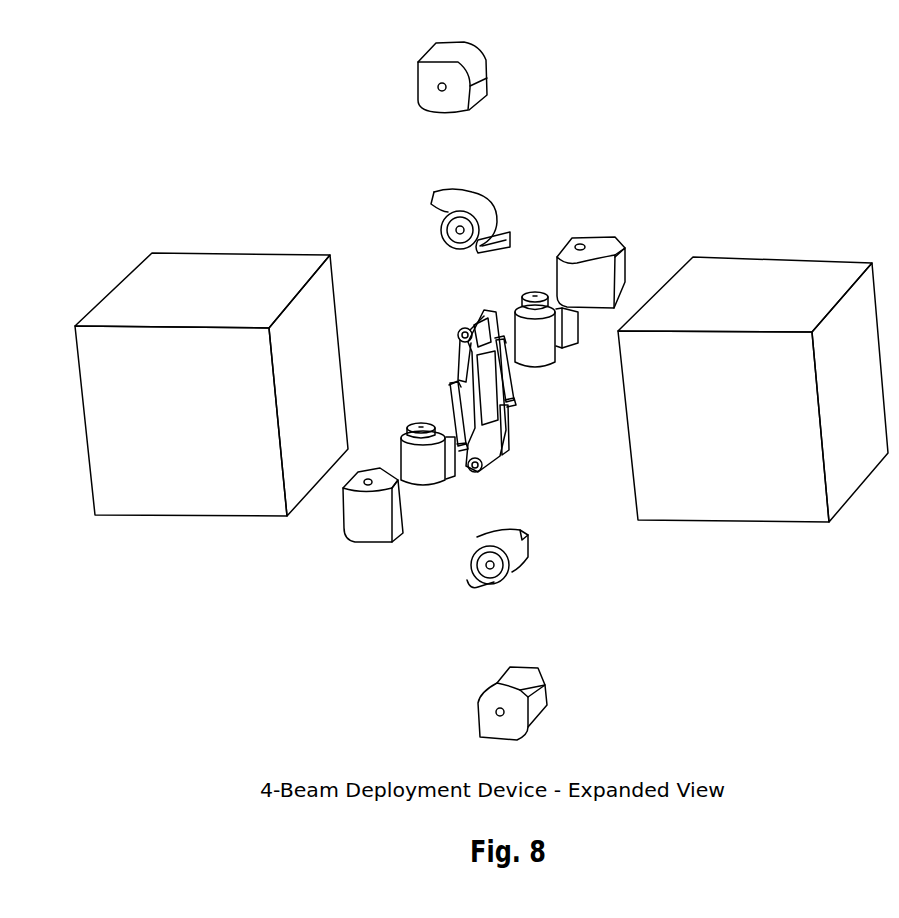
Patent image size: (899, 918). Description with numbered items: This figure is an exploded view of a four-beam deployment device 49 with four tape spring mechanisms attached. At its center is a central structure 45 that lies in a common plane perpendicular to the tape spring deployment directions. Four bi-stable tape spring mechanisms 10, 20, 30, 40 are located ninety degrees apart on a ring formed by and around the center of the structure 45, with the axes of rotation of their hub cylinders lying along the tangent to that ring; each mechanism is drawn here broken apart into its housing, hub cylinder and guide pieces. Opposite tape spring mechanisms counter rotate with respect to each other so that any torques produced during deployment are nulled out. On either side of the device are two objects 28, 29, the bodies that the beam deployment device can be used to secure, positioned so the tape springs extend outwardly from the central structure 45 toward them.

The bi-stable tape spring mechanism 10 is at (397, 52).
The bi-stable tape spring mechanism 20 is at (532, 288).
The object 28 is at (111, 361).
The object 29 is at (798, 363).
The bi-stable tape spring mechanism 30 is at (453, 535).
The bi-stable tape spring mechanism 40 is at (430, 482).
The central structure 45 is at (500, 417).
The 4-beam deployment device 49 is at (620, 120).